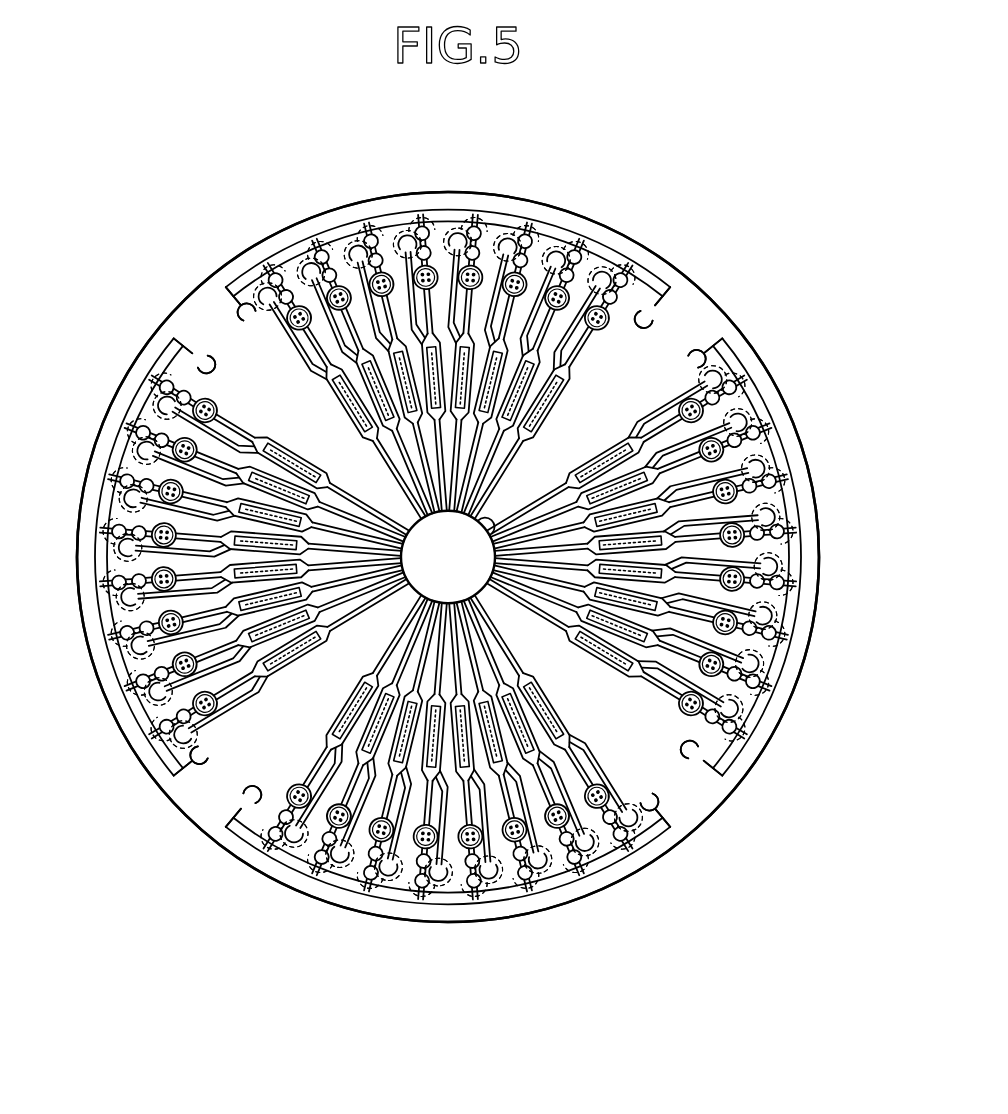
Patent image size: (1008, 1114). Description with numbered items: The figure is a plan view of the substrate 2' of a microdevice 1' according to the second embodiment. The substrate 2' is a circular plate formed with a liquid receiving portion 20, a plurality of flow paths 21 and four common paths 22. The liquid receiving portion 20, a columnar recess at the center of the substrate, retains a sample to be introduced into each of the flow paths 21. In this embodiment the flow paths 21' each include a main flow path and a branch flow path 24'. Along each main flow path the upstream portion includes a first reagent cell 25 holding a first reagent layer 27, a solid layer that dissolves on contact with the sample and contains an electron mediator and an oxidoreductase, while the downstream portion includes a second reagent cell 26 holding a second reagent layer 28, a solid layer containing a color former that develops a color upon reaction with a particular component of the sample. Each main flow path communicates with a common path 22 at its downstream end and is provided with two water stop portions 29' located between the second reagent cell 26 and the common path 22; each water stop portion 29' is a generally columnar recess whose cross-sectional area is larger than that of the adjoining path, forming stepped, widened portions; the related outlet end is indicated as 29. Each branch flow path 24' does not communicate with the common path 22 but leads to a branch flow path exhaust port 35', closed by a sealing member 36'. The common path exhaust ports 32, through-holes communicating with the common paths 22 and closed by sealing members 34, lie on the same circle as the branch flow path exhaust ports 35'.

The microdevice 1' is at (448, 557).
The substrate 2' is at (448, 557).
The liquid receiving portion 20 is at (448, 557).
The flow path 21 is at (448, 556).
The flow path 21' is at (448, 557).
The common path 22 is at (448, 557).
The branch flow path 24' is at (448, 557).
The first reagent cell 25 is at (447, 557).
The second reagent cell 26 is at (448, 557).
The first reagent layer 27 is at (448, 557).
The second reagent layer 28 is at (448, 556).
The outlet end 29 is at (448, 556).
The water stop portion 29' is at (447, 557).
The common path exhaust port 32 is at (448, 557).
The sealing member 34 is at (448, 557).
The branch flow path exhaust port 35' is at (448, 556).
The sealing member 36' is at (448, 556).